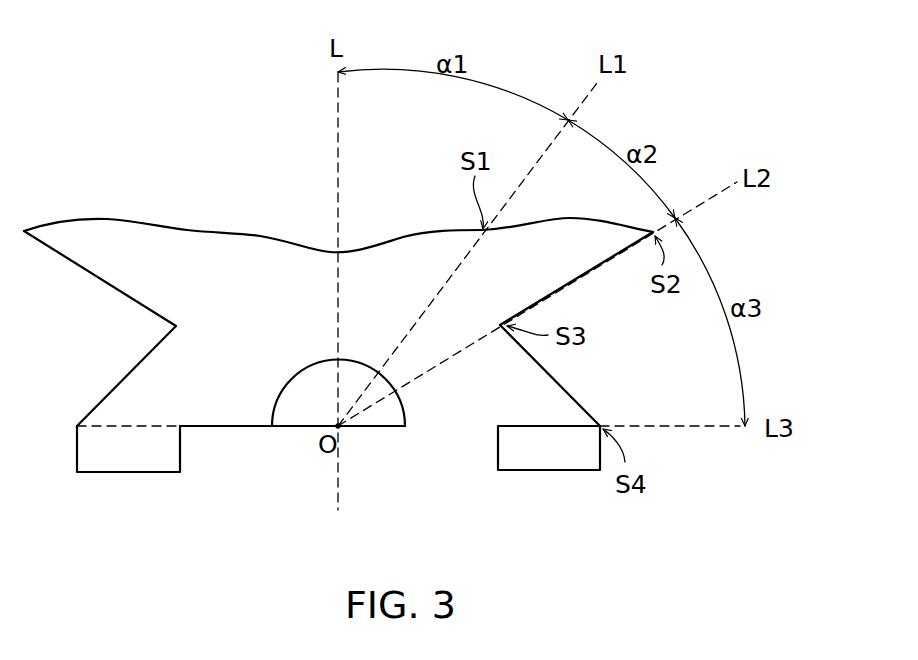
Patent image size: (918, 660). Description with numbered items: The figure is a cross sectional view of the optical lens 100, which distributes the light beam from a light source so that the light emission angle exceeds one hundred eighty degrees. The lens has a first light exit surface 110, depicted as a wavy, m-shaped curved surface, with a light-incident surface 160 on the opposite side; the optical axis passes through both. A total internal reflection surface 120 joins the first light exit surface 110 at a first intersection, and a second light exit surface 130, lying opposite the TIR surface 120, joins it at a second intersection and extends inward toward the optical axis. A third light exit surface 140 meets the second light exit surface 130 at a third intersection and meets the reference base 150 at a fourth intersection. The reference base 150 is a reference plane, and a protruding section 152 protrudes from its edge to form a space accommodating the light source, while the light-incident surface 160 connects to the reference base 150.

The optical lens 100 is at (399, 353).
The first light exit surface 110 is at (410, 236).
The total internal reflection (TIR) surface 120 is at (562, 217).
The second light exit surface 130 is at (574, 291).
The third light exit surface 140 is at (567, 382).
The reference base 150 is at (455, 431).
The protruding section 152 is at (548, 458).
The light-incident surface 160 is at (285, 404).